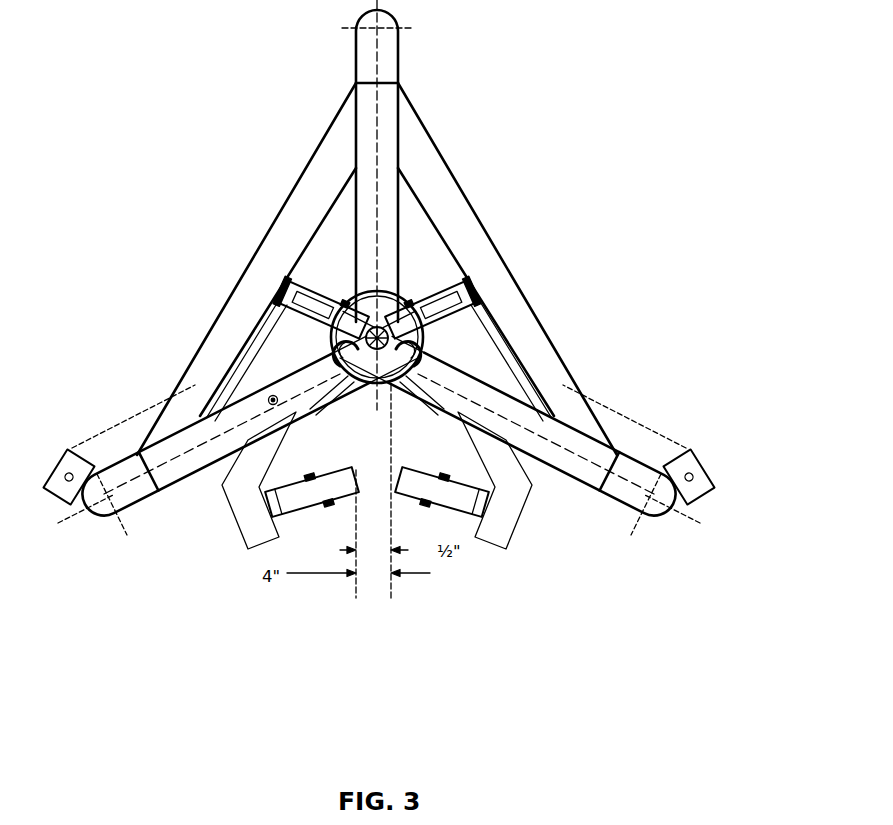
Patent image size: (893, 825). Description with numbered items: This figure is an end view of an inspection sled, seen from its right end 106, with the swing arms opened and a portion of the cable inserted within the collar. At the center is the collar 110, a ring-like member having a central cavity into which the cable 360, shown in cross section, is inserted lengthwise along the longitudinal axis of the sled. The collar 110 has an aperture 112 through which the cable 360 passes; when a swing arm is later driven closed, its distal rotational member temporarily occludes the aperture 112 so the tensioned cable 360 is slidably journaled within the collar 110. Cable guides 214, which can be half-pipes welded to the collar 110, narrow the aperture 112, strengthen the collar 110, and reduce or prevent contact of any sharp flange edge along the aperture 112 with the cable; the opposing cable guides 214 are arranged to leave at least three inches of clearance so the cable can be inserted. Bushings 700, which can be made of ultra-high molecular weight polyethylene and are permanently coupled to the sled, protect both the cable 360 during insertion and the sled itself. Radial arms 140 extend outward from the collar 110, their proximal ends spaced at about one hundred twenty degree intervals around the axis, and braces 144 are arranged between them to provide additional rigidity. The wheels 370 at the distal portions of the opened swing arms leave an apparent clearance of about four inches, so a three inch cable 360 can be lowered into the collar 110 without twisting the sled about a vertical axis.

The right end 106 is at (699, 95).
The radial arms 140 is at (406, 129).
The braces 144 is at (544, 322).
The wheels 370 is at (320, 279).
The collar 110 is at (406, 284).
The bushings 700 is at (331, 410).
The aperture 112 is at (360, 383).
The cable 360 is at (369, 362).
The cable guides 214 is at (392, 383).